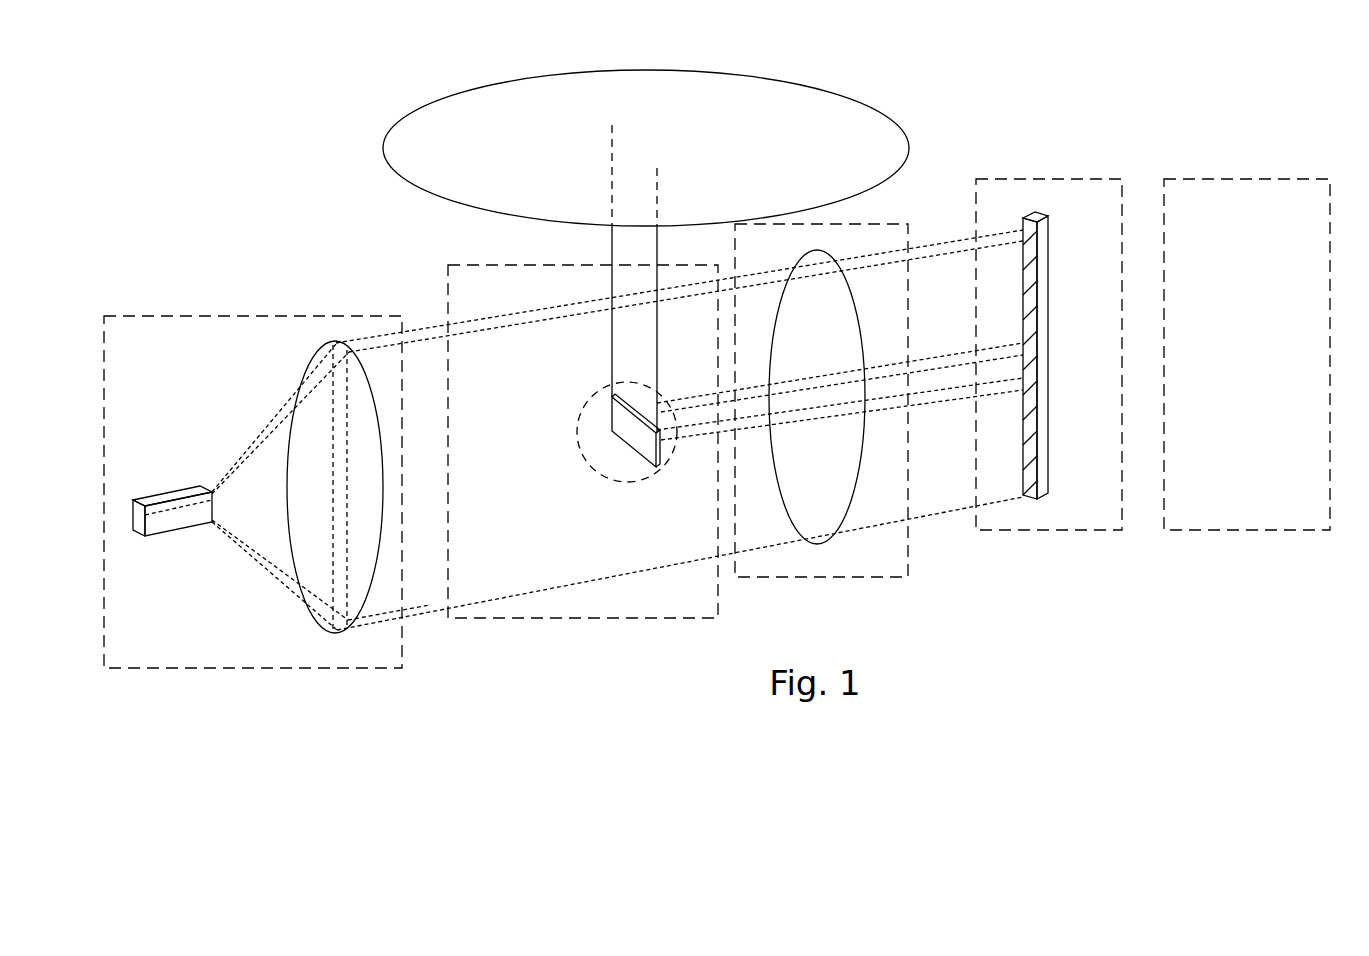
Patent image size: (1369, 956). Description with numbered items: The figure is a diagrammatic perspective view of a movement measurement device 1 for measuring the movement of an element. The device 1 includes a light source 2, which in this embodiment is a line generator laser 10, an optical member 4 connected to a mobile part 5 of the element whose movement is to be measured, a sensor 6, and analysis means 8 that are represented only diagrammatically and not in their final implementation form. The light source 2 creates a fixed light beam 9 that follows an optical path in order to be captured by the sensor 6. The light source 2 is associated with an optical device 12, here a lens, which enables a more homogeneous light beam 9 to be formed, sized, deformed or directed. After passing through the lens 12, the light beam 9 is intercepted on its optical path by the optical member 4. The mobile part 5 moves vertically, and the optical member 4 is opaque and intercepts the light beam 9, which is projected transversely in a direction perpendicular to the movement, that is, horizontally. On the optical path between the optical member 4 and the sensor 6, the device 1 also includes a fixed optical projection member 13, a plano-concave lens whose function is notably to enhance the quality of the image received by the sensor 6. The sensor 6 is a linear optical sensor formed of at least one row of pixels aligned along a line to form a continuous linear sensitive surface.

The movement measurement device 1 is at (150, 234).
The light source 2 is at (229, 431).
The line generator laser 10 is at (163, 489).
The optical device 12 is at (322, 621).
The light beam 9 is at (537, 591).
The mobile part 5 is at (484, 89).
The optical member 4 is at (584, 413).
The optical projection member 13 is at (869, 463).
The sensor 6 is at (1060, 498).
The analysis means 8 is at (1207, 165).